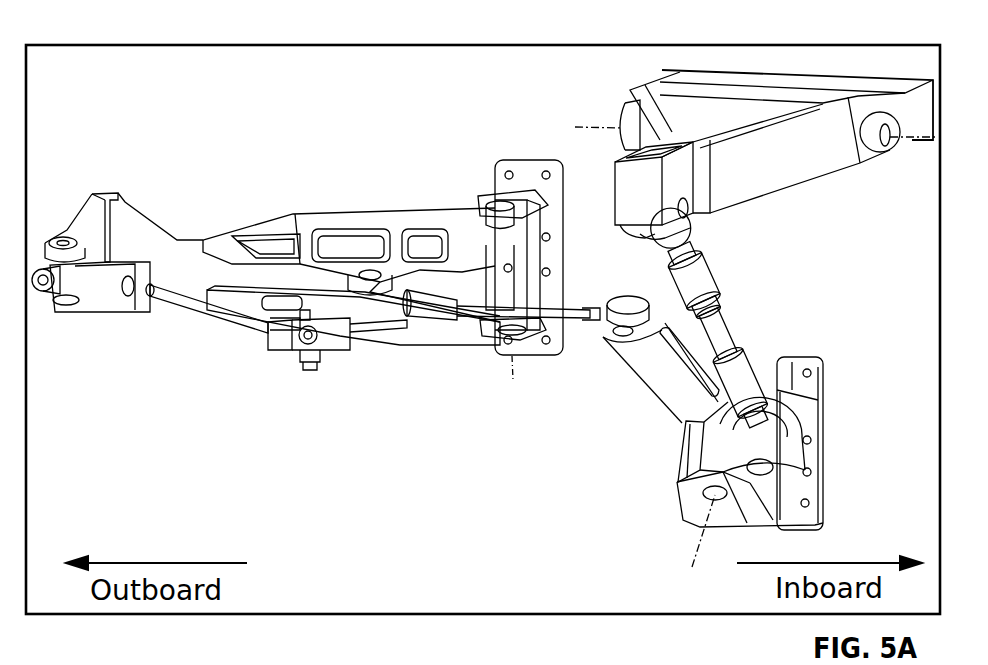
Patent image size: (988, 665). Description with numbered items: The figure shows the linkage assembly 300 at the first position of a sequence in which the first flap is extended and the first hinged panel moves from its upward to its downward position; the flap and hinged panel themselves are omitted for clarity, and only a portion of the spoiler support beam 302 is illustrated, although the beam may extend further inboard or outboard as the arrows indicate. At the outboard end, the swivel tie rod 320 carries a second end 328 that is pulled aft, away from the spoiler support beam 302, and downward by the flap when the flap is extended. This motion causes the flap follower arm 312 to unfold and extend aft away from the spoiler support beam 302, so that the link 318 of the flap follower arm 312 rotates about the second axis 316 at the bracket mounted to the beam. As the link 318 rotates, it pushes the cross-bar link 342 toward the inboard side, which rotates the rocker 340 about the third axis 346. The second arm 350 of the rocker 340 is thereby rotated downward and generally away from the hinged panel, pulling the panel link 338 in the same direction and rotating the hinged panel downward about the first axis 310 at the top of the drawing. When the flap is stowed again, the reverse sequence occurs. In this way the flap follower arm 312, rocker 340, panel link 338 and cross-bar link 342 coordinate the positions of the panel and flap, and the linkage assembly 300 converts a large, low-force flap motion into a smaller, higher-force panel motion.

The linkage assembly 300 is at (238, 152).
The spoiler support beam 302 is at (270, 73).
The first axis 310 is at (593, 125).
The flap follower arm 312 is at (146, 166).
The second axis 316 is at (497, 130).
The link 318 is at (344, 216).
The swivel tie rod 320 is at (193, 307).
The second end 328 is at (300, 343).
The panel link 338 is at (728, 320).
The rocker 340 is at (700, 440).
The cross-bar link 342 is at (430, 298).
The third axis 346 is at (695, 557).
The second arm 350 is at (822, 487).